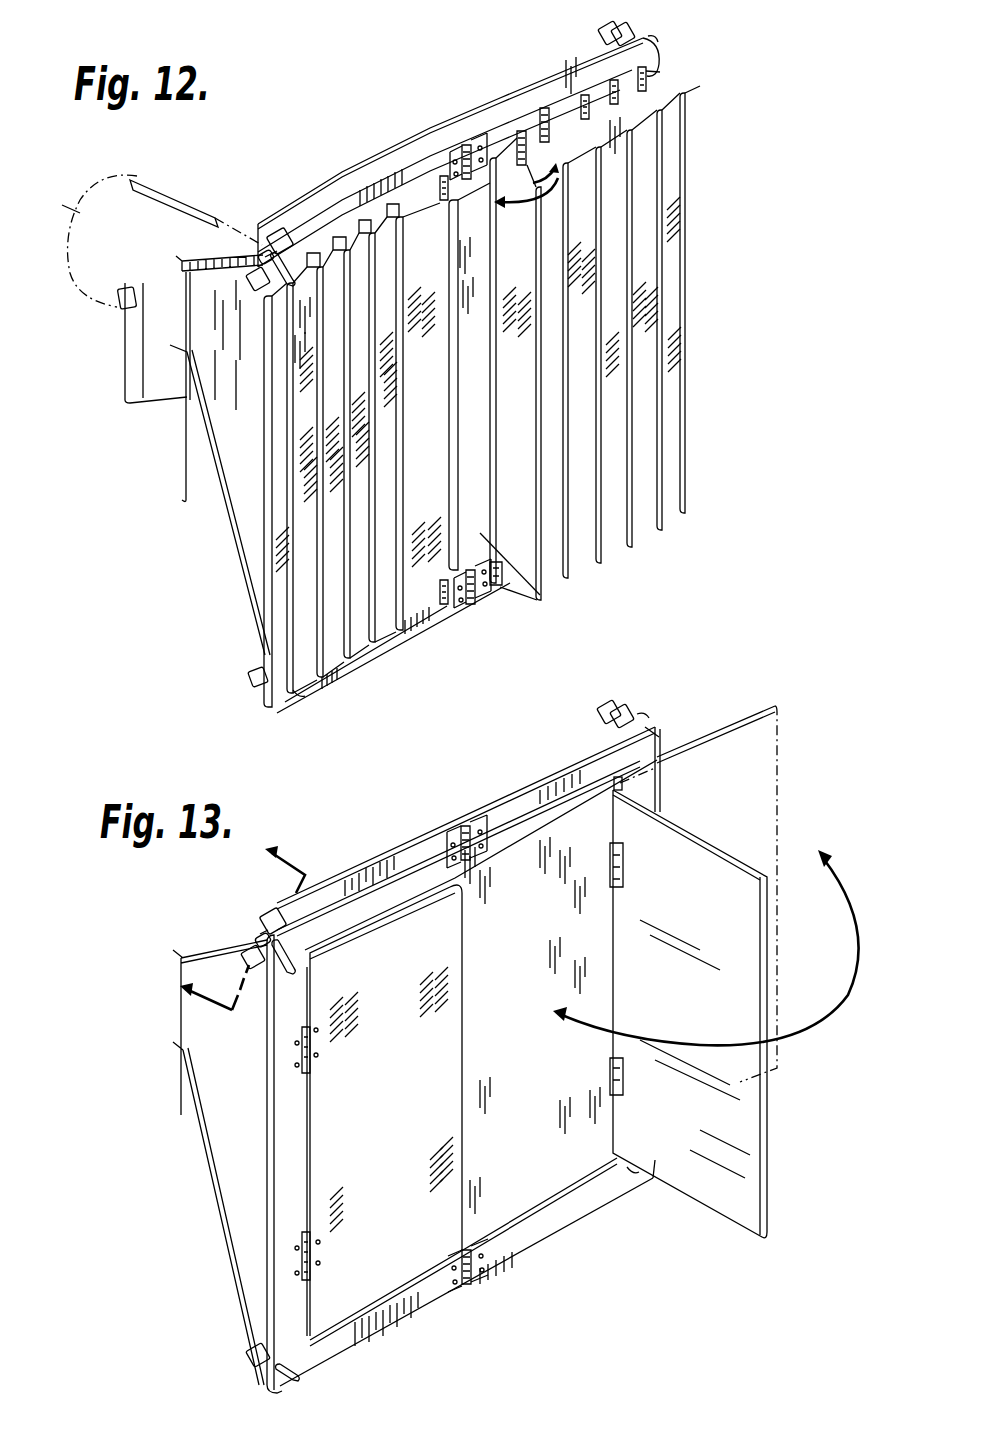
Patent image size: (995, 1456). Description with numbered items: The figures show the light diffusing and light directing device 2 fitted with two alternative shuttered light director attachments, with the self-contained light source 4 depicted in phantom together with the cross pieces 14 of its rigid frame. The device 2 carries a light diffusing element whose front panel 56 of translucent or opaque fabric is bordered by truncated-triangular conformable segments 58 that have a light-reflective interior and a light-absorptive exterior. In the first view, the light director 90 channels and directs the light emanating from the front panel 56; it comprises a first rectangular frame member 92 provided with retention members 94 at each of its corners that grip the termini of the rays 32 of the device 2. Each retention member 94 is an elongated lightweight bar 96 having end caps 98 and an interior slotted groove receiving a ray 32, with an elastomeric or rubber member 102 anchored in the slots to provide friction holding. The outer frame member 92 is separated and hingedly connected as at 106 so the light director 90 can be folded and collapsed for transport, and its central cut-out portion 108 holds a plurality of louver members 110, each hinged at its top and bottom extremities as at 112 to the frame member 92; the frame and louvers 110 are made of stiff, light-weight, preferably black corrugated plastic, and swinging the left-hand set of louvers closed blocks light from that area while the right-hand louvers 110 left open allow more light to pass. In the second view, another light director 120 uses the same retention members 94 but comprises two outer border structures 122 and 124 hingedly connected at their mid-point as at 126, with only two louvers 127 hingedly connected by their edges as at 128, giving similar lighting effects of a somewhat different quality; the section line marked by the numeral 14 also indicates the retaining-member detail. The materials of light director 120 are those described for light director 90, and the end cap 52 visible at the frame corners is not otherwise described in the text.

In FIG. 12, the light diffusing and light directing device 2 is at (340, 166).
In FIG. 13, the light diffusing and light directing device 2 is at (368, 850).
In FIG. 12, the light source 4 is at (120, 197).
In FIG. 13, the cross pieces 14 is at (226, 922).
In FIG. 12, the rays 32 is at (173, 267).
In FIG. 12, the end cap 52 is at (263, 257).
In FIG. 13, the end cap 52 is at (256, 931).
In FIG. 12, the front panel 56 is at (483, 534).
In FIG. 13, the front panel 56 is at (568, 1155).
In FIG. 12, the conformable segments 58 is at (235, 437).
In FIG. 13, the conformable segments 58 is at (513, 790).
In FIG. 12, the light director 90 is at (697, 202).
In FIG. 12, the first rectangular frame member 92 is at (350, 670).
In FIG. 12, the retention members 94 is at (282, 219).
In FIG. 13, the retention members 94 is at (263, 920).
In FIG. 12, the elongated bar 96 is at (268, 257).
In FIG. 13, the elongated bar 96 is at (252, 937).
In FIG. 12, the end caps 98 is at (252, 286).
In FIG. 13, the end caps 98 is at (275, 908).
In FIG. 12, the elastomeric member 102 is at (273, 263).
In FIG. 13, the elastomeric member 102 is at (268, 1000).
In FIG. 12, the hinged connection 106 is at (467, 143).
In FIG. 12, the central cut-out portion 108 is at (443, 608).
In FIG. 12, the louver members 110 is at (300, 575).
In FIG. 12, the hinges 112 is at (527, 130).
In FIG. 13, the light director 120 is at (754, 700).
In FIG. 13, the outer border structure 122 is at (517, 1247).
In FIG. 13, the outer border structure 124 is at (400, 1323).
In FIG. 13, the midpoint hinge connection 126 is at (462, 823).
In FIG. 13, the louvers 127 is at (445, 947).
In FIG. 13, the edge hinges 128 is at (608, 1076).